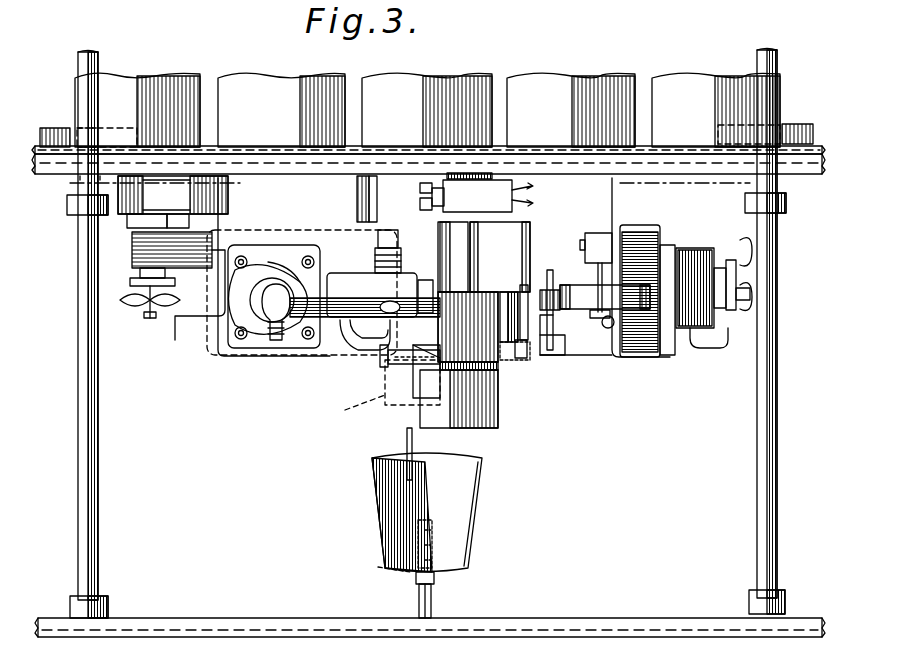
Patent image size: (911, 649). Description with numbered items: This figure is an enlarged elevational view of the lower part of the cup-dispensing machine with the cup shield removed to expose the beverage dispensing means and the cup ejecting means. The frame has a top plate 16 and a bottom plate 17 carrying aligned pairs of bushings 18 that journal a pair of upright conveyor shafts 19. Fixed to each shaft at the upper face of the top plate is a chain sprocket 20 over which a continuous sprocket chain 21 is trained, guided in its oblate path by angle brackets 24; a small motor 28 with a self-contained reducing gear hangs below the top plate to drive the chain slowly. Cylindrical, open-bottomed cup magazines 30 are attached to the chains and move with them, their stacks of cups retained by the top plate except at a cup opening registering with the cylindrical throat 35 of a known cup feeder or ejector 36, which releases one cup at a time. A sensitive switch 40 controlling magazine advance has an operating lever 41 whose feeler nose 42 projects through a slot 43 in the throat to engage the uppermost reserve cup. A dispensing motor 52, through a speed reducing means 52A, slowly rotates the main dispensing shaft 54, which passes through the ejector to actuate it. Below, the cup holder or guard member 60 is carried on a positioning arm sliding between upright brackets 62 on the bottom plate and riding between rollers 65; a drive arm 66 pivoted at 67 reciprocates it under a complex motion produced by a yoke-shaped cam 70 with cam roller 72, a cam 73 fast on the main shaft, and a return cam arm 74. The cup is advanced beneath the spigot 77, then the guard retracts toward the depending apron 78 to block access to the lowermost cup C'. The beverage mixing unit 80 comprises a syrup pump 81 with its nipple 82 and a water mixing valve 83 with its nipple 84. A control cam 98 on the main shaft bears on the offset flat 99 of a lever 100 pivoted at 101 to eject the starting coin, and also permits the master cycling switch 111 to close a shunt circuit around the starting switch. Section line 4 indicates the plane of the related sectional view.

The section line 4- 4 is at (62, 183).
The top plate 16 is at (300, 174).
The bottom plate 17 is at (188, 625).
The bushings 18 is at (70, 195).
The upright conveyor shafts 19 is at (100, 440).
The chain sprocket 20 is at (78, 130).
The sprocket chain 21 is at (42, 128).
The angle brackets 24 is at (205, 147).
The motor 28 is at (185, 255).
The cup magazines 30 is at (402, 108).
The cylindrical throat 35 is at (365, 192).
The cup feeder or ejector 36 is at (512, 260).
The sensitive switch 40 is at (506, 208).
The operating lever 41 is at (444, 196).
The feeler nose 42 is at (420, 204).
The slot 43 is at (413, 193).
The dispensing motor 52 is at (688, 240).
The speed reducing means 52A is at (652, 222).
The main dispensing shaft 54 is at (550, 272).
The cup holder or guard member 60 is at (478, 500).
The upright brackets 62 is at (418, 600).
The rollers 65 is at (435, 535).
The drive arm 66 is at (413, 460).
The pivotal connection 67 is at (388, 570).
The yoke-shaped cam 70 is at (515, 352).
The cam roller 72 is at (527, 352).
The cam 73 is at (506, 298).
The return cam arm 74 is at (524, 305).
The spigot 77 is at (440, 382).
The depending apron 78 is at (495, 413).
The mixing unit 80 is at (346, 263).
The syrup pump 81 is at (270, 262).
The nipple 82 is at (275, 340).
The water mixing valve 83 is at (368, 292).
The nipple 84 is at (402, 262).
The control cam 98 is at (597, 282).
The offset flat 99 is at (590, 314).
The lever 100 is at (603, 328).
The pivot 101 is at (605, 316).
The master cycling switch 111 is at (600, 232).
The lowermost cup C' is at (380, 391).